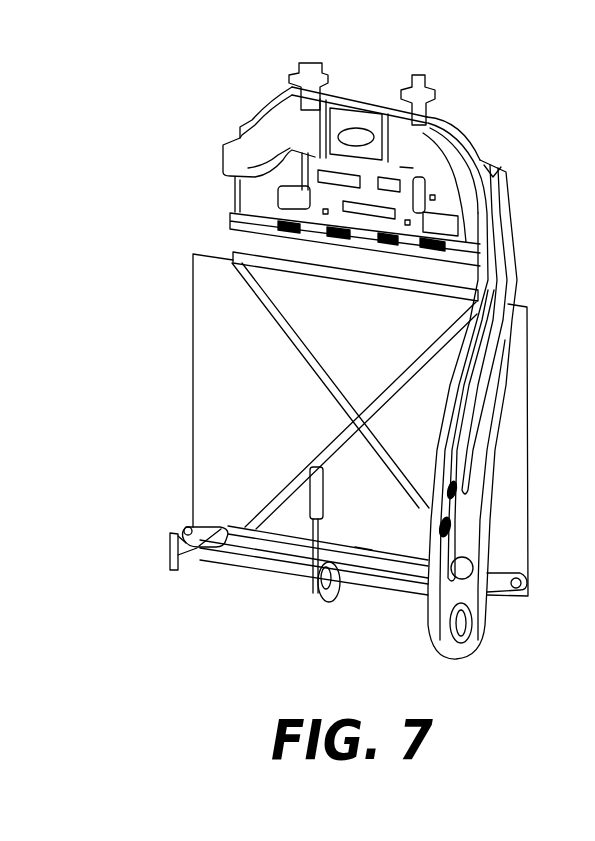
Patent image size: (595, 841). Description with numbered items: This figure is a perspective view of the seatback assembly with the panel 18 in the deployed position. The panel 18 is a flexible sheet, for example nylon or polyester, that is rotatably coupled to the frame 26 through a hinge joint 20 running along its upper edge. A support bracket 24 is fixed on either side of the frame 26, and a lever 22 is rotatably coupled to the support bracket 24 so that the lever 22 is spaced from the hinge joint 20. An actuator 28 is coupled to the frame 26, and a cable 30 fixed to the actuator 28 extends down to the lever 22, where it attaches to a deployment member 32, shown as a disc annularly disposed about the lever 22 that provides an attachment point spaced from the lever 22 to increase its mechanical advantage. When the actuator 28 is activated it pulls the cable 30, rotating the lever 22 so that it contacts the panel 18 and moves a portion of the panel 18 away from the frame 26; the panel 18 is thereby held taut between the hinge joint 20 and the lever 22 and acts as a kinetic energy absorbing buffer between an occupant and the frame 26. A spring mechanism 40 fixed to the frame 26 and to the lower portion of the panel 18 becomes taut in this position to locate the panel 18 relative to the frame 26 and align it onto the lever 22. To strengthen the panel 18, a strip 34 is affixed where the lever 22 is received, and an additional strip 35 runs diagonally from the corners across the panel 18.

The panel 18 is at (515, 420).
The hinge joint 20 is at (363, 277).
The lever 22 is at (260, 573).
The support bracket 24 is at (181, 562).
The frame 26 is at (506, 200).
The actuator 28 is at (324, 488).
The cable 30 is at (321, 530).
The deployment member 32 is at (335, 597).
The strip 34 is at (357, 545).
The additional strip 35 is at (291, 331).
The spring mechanism 40 is at (492, 607).